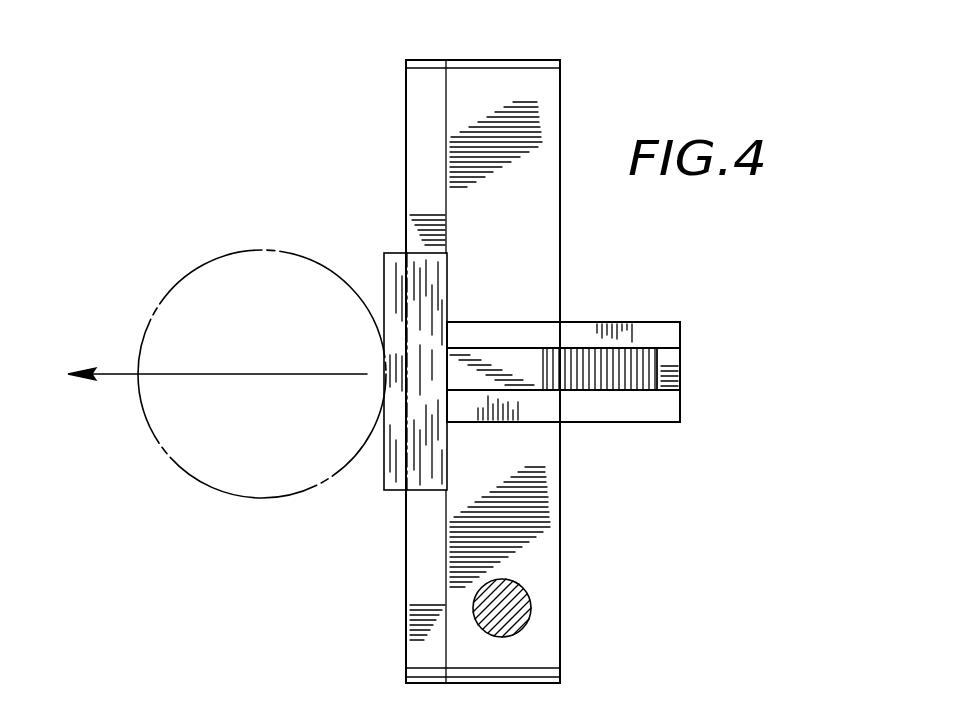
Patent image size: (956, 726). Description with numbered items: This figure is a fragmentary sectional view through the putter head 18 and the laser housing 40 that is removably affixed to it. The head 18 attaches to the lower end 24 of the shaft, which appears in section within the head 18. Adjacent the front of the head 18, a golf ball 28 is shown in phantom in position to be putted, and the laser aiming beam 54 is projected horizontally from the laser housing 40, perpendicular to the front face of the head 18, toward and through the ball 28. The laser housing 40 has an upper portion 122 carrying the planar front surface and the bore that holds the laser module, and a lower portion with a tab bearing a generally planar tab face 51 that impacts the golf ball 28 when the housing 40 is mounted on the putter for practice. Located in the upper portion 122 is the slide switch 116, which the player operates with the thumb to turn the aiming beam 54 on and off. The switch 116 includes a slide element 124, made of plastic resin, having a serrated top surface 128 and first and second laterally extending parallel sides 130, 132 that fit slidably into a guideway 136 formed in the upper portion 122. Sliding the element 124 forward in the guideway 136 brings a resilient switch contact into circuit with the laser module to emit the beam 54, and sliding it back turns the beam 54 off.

The head 18 is at (406, 120).
The golf ball 28 is at (230, 253).
The laser aiming beam 54 is at (118, 373).
The tab face 51 is at (383, 468).
The guideway 136 is at (483, 348).
The slide switch 116 is at (597, 300).
The slide element 124 is at (630, 348).
The first side 130 is at (645, 347).
The laser housing 40 is at (683, 370).
The upper portion 122 is at (670, 423).
The second side 132 is at (627, 400).
The serrated top surface 128 is at (603, 393).
The lower end 24 is at (527, 603).